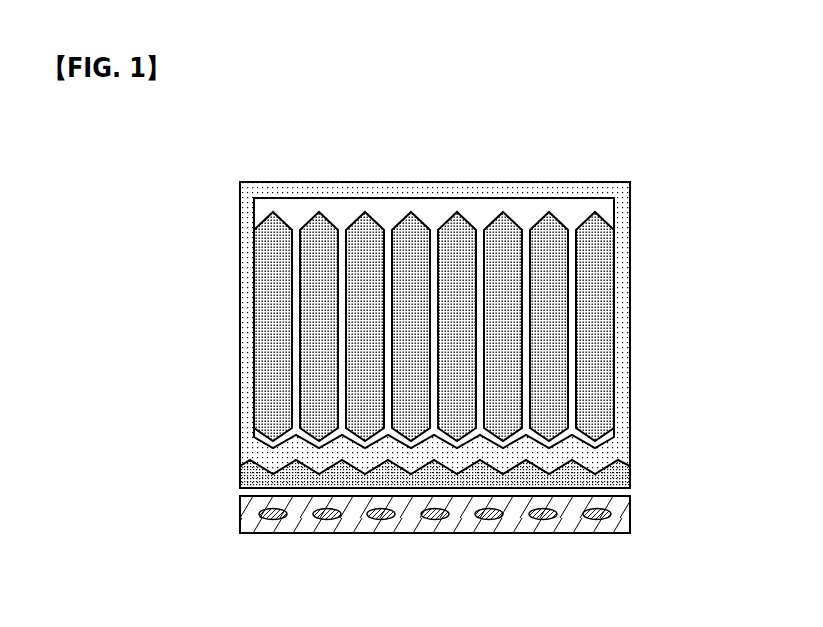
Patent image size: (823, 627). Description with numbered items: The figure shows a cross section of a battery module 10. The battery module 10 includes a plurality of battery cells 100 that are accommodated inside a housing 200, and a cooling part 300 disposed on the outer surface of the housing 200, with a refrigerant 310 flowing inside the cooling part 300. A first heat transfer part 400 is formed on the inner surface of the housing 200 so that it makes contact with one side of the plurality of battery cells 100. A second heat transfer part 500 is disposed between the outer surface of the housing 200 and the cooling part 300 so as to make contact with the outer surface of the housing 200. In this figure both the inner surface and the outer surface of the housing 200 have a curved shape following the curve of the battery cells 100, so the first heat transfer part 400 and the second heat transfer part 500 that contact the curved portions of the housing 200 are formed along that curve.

The battery module 10 is at (446, 140).
The battery cells 100 is at (603, 248).
The housing 200 is at (632, 310).
The cooling part 300 is at (631, 513).
The refrigerant 310 is at (435, 519).
The first heat transfer part 400 is at (607, 445).
The second heat transfer part 500 is at (622, 475).